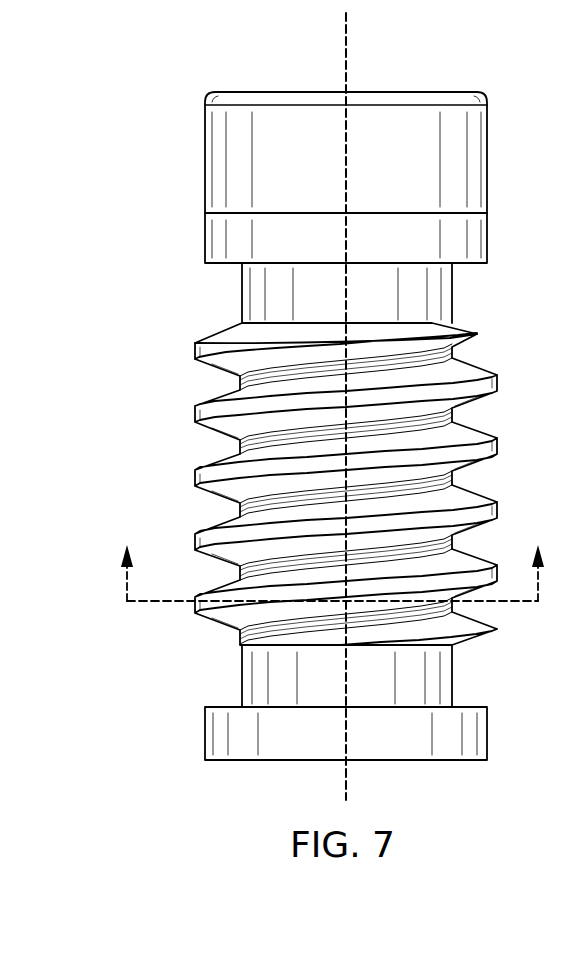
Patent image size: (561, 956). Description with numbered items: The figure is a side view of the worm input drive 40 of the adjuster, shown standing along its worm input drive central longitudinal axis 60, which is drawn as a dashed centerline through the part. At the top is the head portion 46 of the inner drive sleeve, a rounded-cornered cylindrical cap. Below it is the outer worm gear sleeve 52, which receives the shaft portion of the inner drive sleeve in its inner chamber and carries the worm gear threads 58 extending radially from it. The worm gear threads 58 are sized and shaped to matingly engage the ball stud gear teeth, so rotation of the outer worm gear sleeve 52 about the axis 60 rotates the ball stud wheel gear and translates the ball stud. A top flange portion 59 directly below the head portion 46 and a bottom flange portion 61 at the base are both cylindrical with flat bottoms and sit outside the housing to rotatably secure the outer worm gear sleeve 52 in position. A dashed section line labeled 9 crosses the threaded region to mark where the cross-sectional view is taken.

The worm input drive 40 is at (176, 70).
The head portion 46 is at (233, 162).
The outer worm gear sleeve 52 is at (242, 294).
The worm gear threads 58 is at (482, 370).
The top flange portion 59 is at (478, 239).
The worm input drive central longitudinal axis 60 is at (346, 62).
The bottom flange portion 61 is at (472, 741).
The section line 9- 9 is at (334, 554).